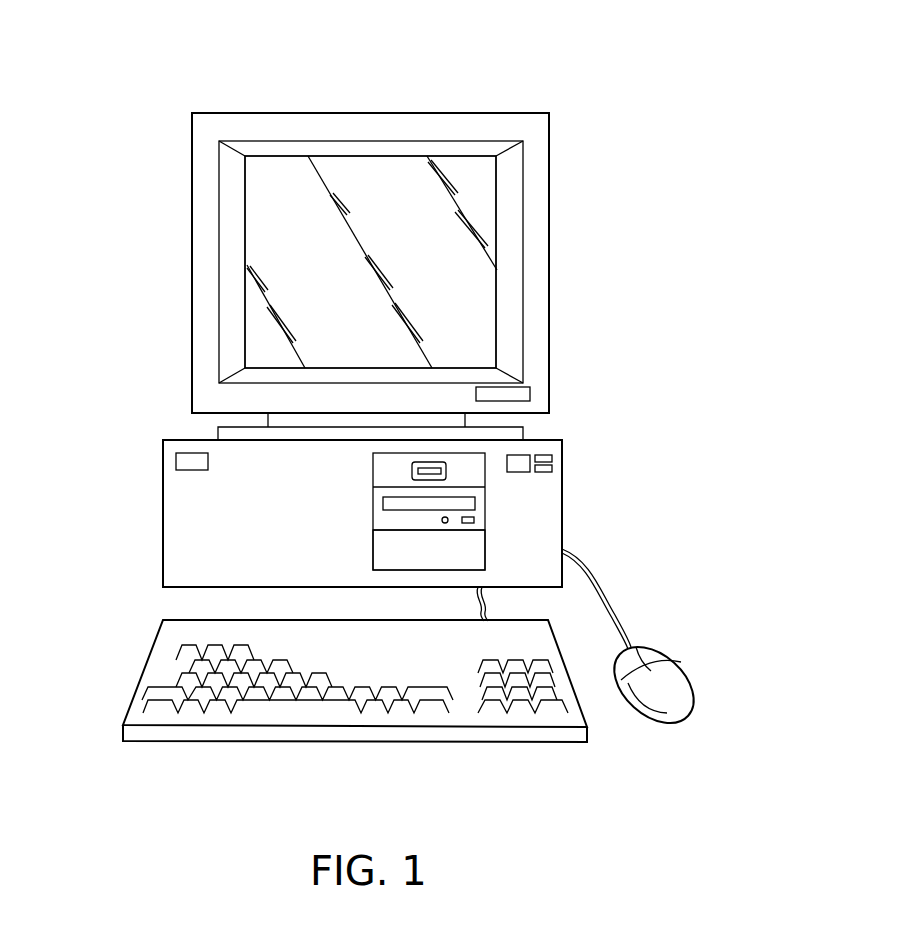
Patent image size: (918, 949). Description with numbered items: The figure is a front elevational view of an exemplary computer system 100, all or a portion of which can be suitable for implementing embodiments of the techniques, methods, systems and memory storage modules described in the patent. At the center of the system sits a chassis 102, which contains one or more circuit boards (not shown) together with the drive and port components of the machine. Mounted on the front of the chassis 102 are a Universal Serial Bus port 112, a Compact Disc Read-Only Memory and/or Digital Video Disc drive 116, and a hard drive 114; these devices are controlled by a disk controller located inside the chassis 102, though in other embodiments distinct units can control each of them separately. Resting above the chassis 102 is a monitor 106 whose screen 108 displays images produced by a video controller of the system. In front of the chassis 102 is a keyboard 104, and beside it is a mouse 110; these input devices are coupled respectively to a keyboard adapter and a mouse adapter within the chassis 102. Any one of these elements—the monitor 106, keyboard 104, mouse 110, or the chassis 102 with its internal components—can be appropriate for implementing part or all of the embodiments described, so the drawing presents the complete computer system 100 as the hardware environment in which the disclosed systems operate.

The computer system 100 is at (542, 92).
The chassis 102 is at (163, 517).
The keyboard 104 is at (145, 668).
The monitor 106 is at (263, 113).
The screen 108 is at (290, 267).
The mouse 110 is at (670, 673).
The Universal Serial Bus (USB) port 112 is at (446, 470).
The hard drive 114 is at (477, 548).
The CD-ROM and/or DVD drive 116 is at (476, 508).